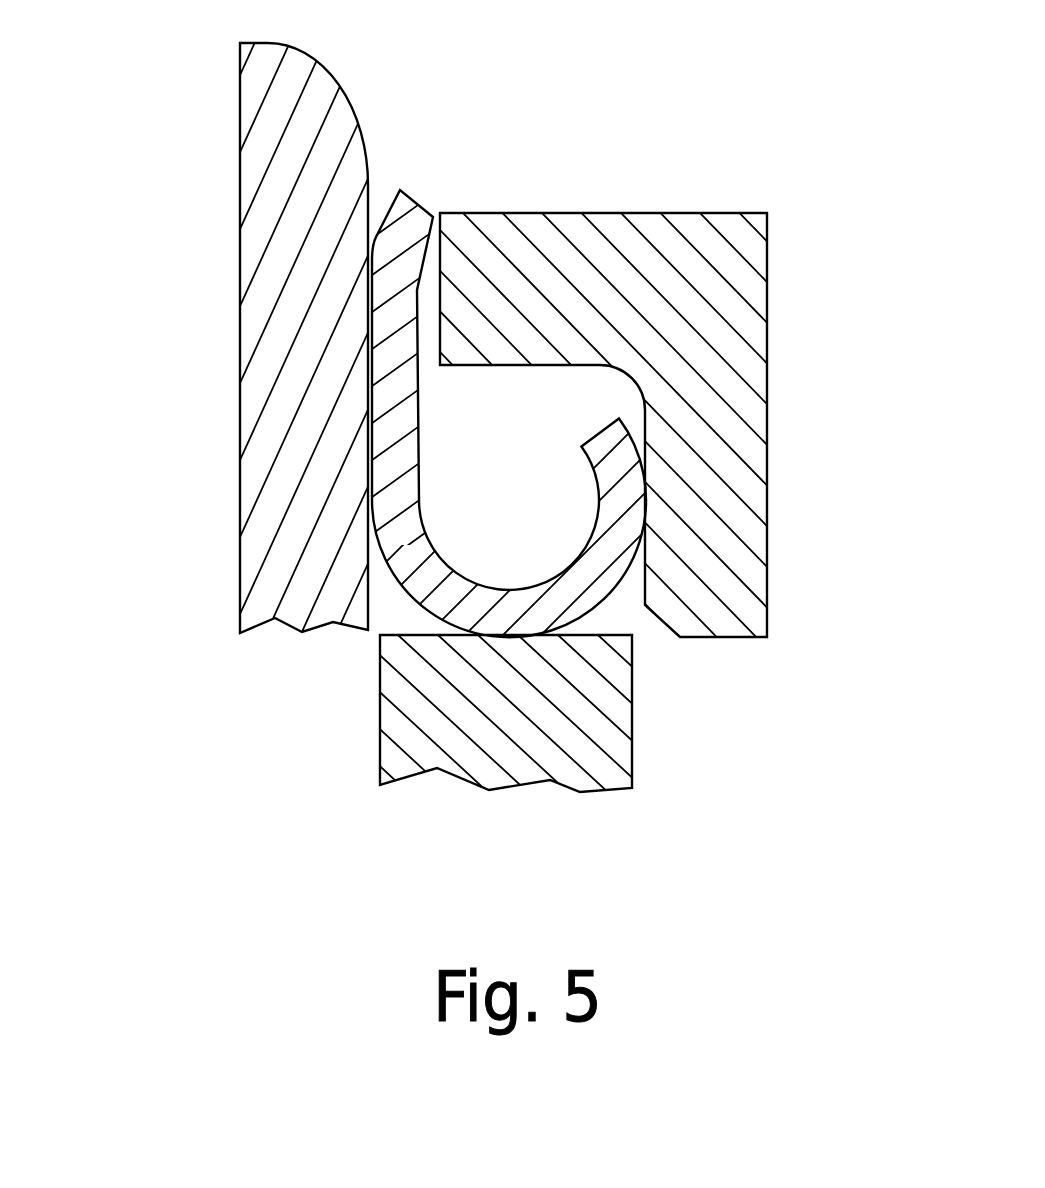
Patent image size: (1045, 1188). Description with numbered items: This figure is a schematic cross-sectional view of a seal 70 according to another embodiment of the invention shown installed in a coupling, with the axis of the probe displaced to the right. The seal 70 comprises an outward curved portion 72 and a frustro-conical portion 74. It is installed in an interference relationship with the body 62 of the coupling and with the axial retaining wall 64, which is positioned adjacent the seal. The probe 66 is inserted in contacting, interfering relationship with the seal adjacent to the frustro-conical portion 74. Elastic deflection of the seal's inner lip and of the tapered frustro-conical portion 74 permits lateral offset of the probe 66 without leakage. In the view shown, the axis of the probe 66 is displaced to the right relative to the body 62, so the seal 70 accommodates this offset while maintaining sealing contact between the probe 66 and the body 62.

The body 62 is at (768, 526).
The axial retaining wall 64 is at (633, 752).
The probe 66 is at (238, 406).
The seal 70 is at (516, 502).
The outward curved portion 72 is at (525, 495).
The frustro-conical portion 74 is at (427, 535).